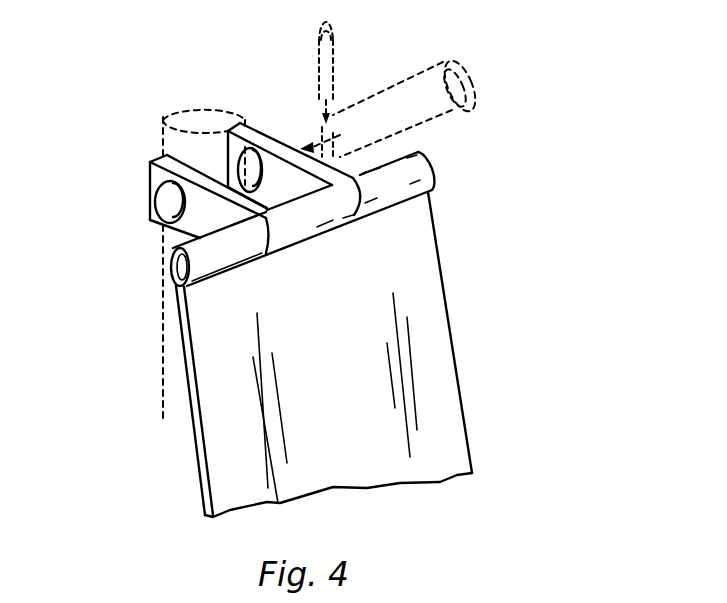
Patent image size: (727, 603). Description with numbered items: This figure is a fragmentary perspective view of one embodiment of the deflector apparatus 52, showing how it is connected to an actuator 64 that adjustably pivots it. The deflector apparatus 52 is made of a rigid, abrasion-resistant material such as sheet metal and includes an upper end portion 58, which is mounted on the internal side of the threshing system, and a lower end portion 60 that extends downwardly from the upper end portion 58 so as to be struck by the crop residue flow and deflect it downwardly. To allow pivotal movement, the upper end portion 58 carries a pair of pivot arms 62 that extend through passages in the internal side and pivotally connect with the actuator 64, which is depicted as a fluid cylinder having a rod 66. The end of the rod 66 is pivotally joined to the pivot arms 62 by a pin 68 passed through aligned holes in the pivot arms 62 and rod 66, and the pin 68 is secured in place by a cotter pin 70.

The deflector apparatus 52 is at (480, 471).
The upper end portion 58 is at (434, 217).
The lower end portion 60 is at (438, 482).
The pivot arms 62 is at (255, 128).
The actuator 64 is at (141, 259).
The rod 66 is at (178, 112).
The pin 68 is at (474, 68).
The cotter pin 70 is at (333, 58).